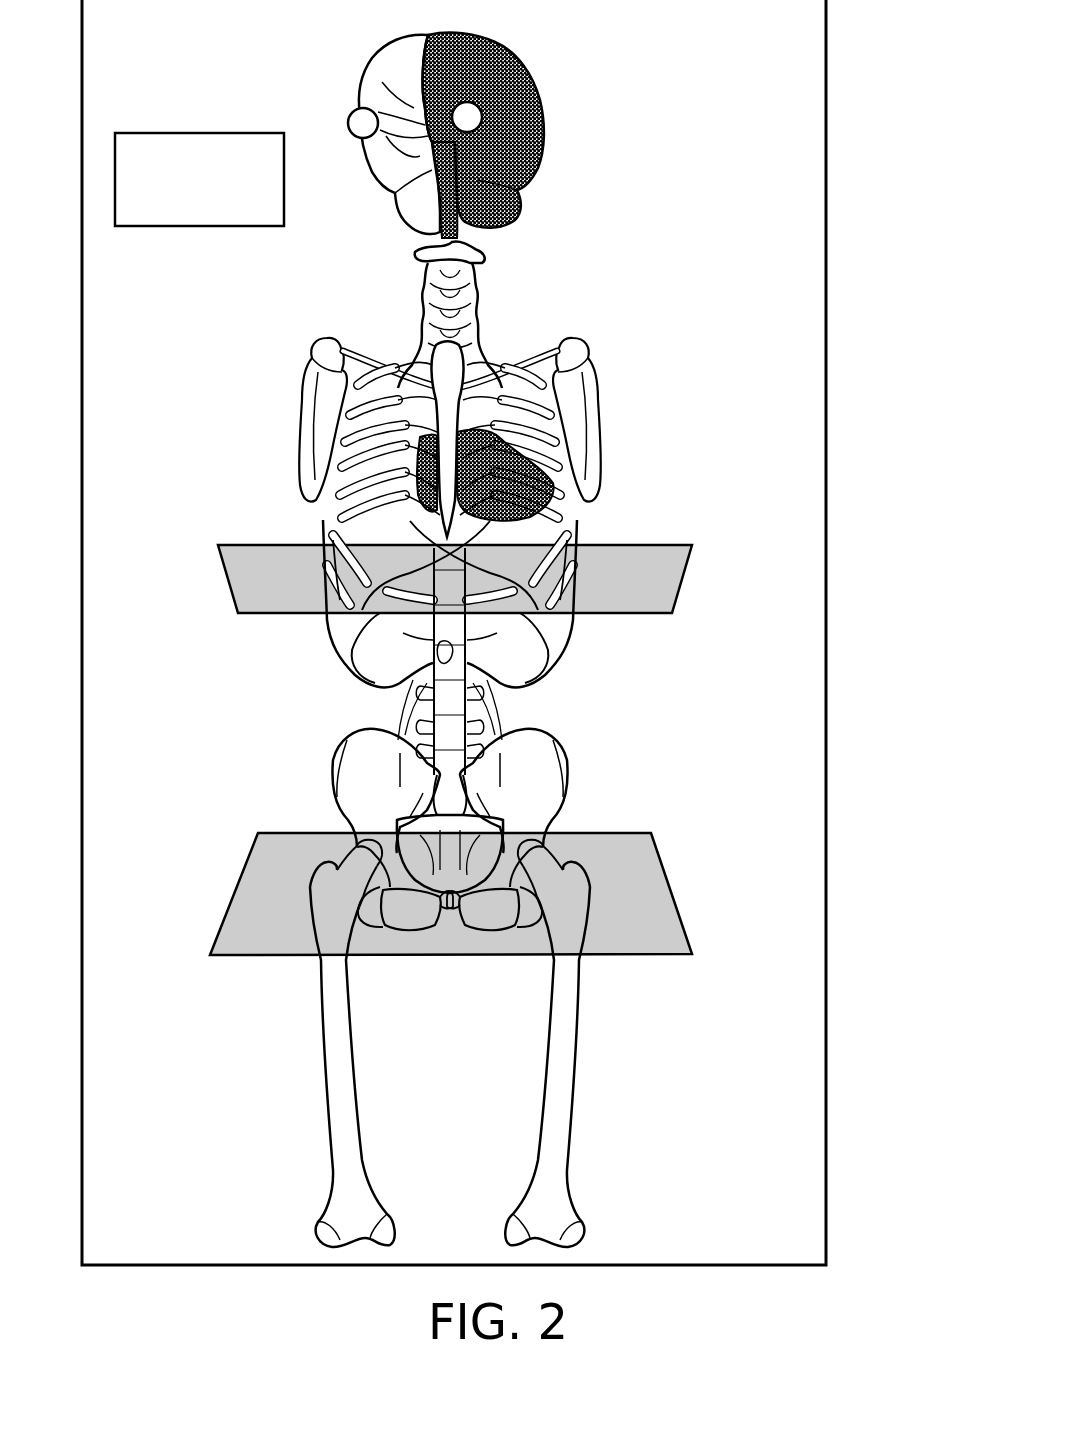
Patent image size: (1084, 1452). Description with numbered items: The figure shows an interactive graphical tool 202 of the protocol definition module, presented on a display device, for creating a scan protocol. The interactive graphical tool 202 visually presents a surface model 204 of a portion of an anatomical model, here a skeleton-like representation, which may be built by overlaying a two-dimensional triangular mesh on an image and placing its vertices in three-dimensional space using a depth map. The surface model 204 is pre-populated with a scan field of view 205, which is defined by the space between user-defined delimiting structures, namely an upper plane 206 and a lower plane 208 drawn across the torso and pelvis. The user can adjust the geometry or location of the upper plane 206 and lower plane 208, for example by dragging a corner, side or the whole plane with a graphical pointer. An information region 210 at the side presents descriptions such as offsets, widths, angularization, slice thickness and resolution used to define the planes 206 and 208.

The interactive graphical tool 202 is at (826, 121).
The surface model 204 is at (543, 120).
The scan field of view 205 is at (280, 711).
The upper plane 206 is at (672, 586).
The lower plane 208 is at (651, 883).
The information region 210 is at (193, 133).